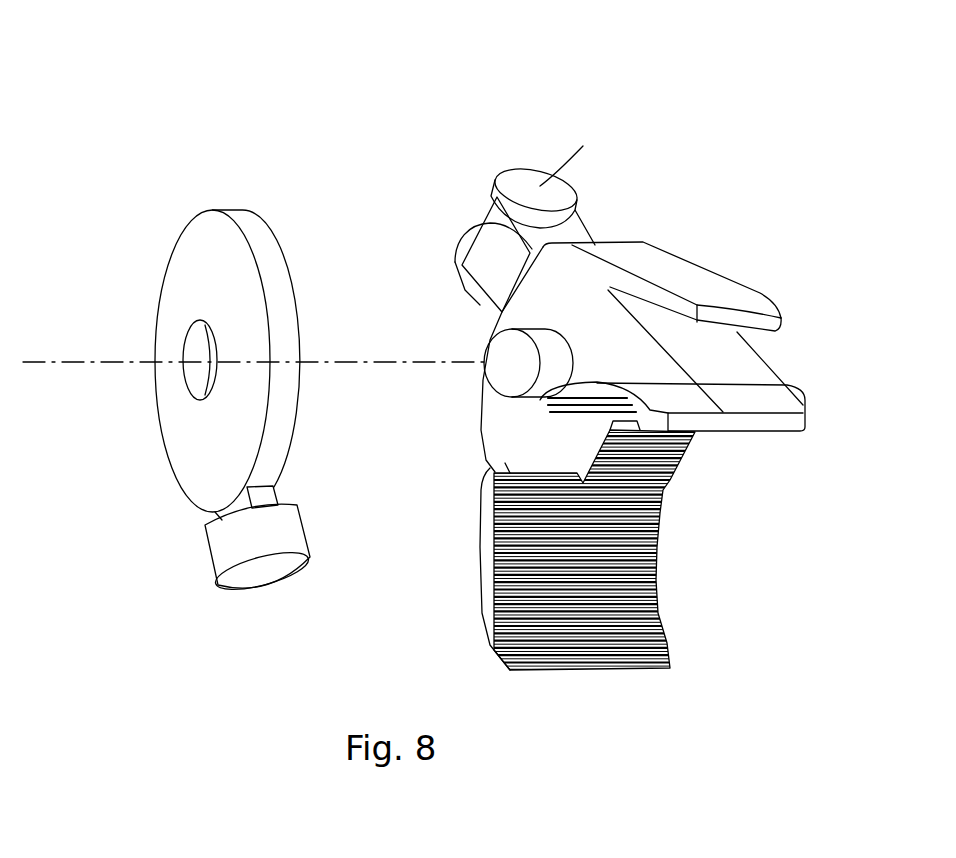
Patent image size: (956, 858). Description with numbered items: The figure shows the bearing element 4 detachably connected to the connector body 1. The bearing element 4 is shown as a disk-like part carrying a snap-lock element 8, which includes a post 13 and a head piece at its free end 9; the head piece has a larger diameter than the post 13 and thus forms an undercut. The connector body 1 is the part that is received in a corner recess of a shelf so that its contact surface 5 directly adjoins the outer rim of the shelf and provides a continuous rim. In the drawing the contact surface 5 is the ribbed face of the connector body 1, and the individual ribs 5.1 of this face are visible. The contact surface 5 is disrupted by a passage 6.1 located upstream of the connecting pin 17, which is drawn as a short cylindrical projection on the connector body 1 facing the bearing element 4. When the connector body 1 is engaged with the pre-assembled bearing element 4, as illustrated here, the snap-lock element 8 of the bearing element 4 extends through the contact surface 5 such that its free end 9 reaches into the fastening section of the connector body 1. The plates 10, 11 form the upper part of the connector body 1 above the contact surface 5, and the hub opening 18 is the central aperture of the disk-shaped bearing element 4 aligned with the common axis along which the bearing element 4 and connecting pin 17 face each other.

The connector body 1 is at (438, 499).
The bearing element 4 is at (172, 227).
The contact surface 5 is at (612, 579).
The ribs 5.1 is at (650, 623).
The passage 6.1 is at (573, 432).
The snap-lock element 8 is at (233, 564).
The free end 9 is at (264, 572).
The plate 10 is at (690, 336).
The plate 11 is at (760, 359).
The post 13 is at (264, 497).
The connecting pin 17 is at (503, 355).
The hub opening 18 is at (207, 363).